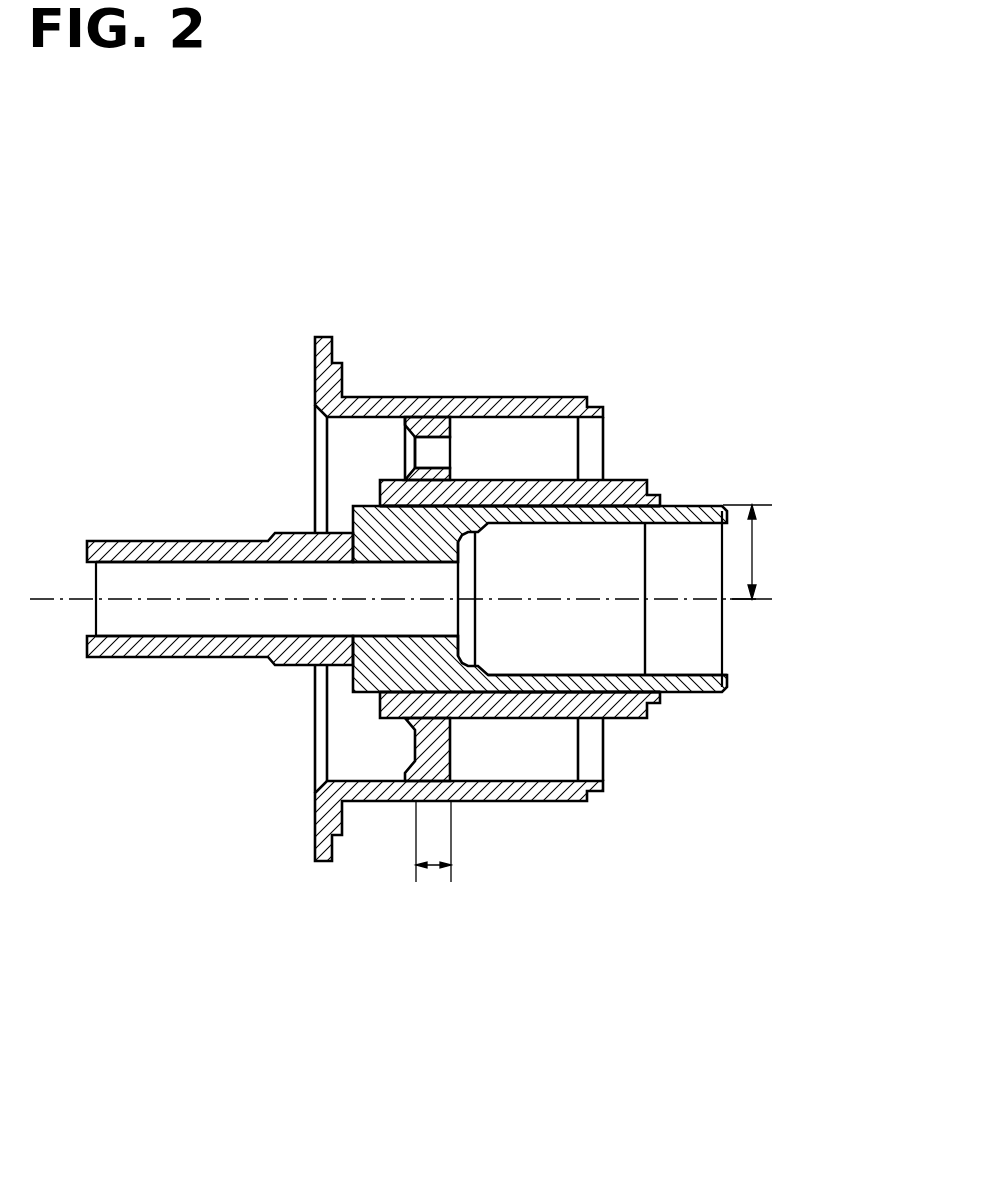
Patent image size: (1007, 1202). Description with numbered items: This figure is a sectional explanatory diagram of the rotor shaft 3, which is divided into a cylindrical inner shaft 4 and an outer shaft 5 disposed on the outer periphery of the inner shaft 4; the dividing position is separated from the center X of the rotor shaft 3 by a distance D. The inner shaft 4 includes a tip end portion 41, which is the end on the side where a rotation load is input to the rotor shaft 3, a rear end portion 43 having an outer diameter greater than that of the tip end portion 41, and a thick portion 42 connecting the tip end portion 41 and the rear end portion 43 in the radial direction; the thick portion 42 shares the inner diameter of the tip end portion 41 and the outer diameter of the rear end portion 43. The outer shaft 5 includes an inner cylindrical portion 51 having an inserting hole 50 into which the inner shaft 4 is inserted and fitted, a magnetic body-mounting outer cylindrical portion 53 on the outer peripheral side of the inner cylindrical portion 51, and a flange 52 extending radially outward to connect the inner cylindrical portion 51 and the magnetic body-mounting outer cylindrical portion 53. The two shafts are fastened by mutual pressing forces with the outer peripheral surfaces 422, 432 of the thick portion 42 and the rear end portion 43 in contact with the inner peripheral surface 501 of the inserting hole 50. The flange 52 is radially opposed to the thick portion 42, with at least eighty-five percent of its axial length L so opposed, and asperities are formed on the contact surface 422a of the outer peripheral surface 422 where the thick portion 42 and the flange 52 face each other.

The rotor shaft 3 is at (225, 338).
The inner shaft 4 is at (163, 658).
The tip end portion 41 is at (172, 553).
The thick portion 42 is at (392, 520).
The outer peripheral surface 422 is at (462, 507).
The contact surface 422a is at (433, 445).
The rear end portion 43 is at (622, 512).
The outer peripheral surface 432 is at (538, 503).
The outer shaft 5 is at (560, 805).
The inserting hole 50 is at (398, 665).
The inner peripheral surface 501 is at (582, 680).
The inner cylindrical portion 51 is at (536, 710).
The flange 52 is at (440, 748).
The magnetic body-mounting outer cylindrical portion 53 is at (372, 795).